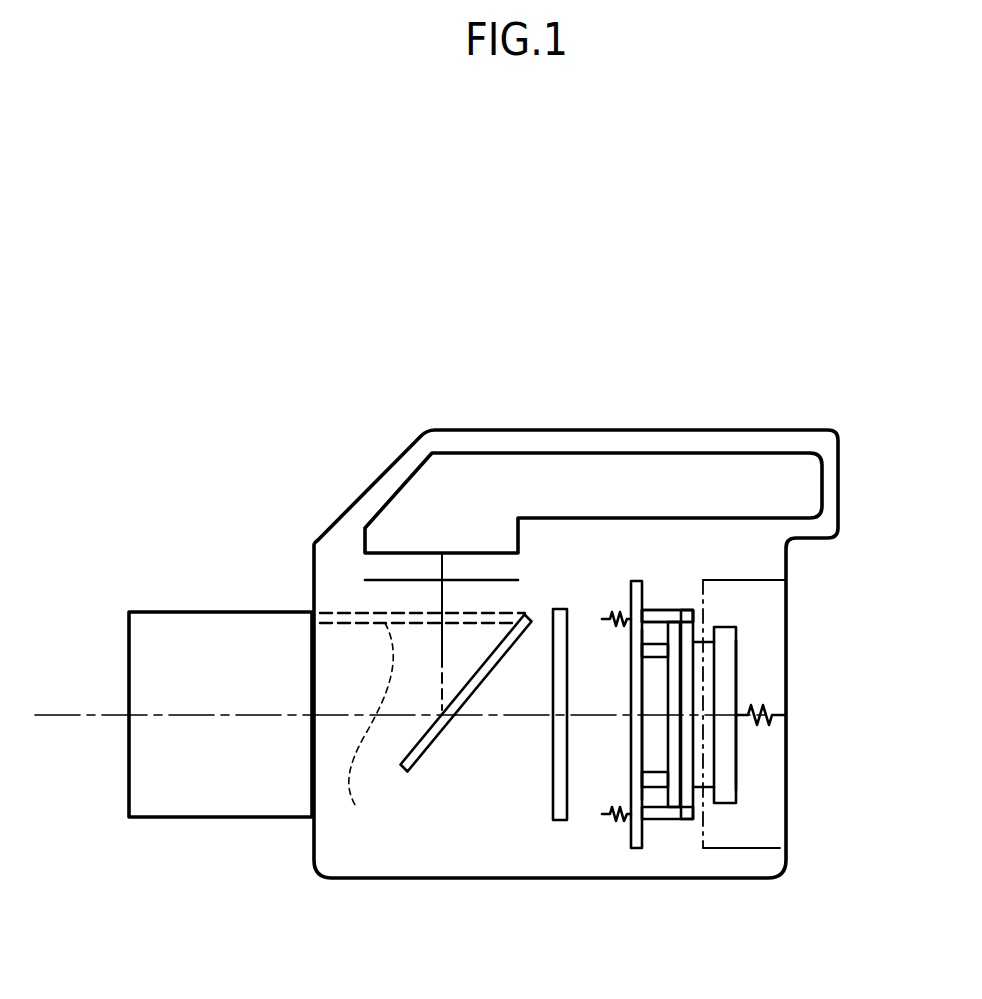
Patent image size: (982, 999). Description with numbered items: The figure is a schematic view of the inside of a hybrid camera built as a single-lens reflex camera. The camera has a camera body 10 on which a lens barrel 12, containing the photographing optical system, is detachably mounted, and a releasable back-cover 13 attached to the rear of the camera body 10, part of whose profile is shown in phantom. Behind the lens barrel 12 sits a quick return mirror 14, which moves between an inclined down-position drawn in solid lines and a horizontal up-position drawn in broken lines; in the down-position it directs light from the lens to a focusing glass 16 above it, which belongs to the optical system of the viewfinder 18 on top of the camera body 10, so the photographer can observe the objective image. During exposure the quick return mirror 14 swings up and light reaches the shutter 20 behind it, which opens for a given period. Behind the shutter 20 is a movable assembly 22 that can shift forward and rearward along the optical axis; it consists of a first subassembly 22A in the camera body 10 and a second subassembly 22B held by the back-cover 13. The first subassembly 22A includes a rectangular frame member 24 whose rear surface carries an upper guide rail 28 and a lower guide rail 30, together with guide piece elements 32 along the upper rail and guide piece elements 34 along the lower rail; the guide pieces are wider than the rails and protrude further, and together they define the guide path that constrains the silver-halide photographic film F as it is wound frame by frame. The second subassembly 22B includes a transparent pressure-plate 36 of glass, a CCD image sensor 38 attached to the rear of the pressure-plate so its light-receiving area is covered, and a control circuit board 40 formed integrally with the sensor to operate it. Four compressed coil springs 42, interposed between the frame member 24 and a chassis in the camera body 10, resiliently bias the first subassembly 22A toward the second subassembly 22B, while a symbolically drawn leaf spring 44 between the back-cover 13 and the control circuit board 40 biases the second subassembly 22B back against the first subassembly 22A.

The camera body 10 is at (556, 426).
The lens barrel 12 is at (223, 785).
The releasable back-cover 13 is at (787, 797).
The quick return mirror 14 is at (363, 802).
The focusing glass 16 is at (377, 581).
The viewfinder 18 is at (793, 485).
The shutter 20 is at (553, 762).
The movable assembly 22 is at (616, 668).
The first subassembly 22A is at (617, 749).
The second subassembly 22B is at (749, 636).
The rectangular frame member 24 is at (630, 845).
The upper guide rail element 28 is at (658, 650).
The lower guide rail element 30 is at (658, 787).
The guide piece elements 32 is at (670, 618).
The guide piece elements 34 is at (678, 815).
The transparent pressure-plate 36 is at (686, 818).
The CCD image sensor 38 is at (707, 657).
The control circuit board 40 is at (725, 752).
The compressed coil springs 42 is at (622, 618).
The leaf spring 44 is at (762, 690).
The silver-halide photographic film F is at (673, 768).